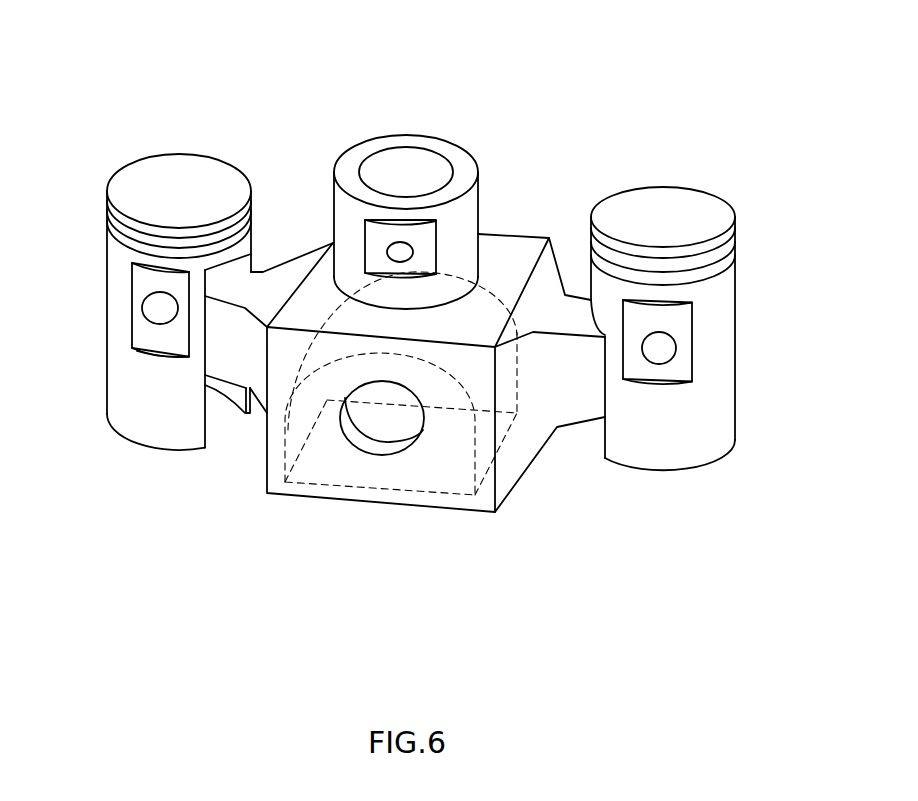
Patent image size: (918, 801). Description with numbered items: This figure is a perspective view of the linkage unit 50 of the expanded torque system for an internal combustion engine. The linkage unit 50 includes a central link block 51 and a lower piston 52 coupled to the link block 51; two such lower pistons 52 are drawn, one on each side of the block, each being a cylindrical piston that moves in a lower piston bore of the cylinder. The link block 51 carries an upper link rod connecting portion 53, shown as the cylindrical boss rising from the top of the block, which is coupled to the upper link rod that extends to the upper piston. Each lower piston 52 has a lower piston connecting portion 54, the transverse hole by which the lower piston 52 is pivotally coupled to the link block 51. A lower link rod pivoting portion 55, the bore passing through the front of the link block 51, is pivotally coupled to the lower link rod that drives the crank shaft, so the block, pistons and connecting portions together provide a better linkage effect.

The linkage unit 50 is at (449, 176).
The link block 51 is at (510, 492).
The lower piston 52 is at (421, 307).
The upper link rod connecting portion 53 is at (403, 250).
The lower piston connecting portion 54 is at (161, 312).
The lower link rod pivoting portion 55 is at (385, 427).